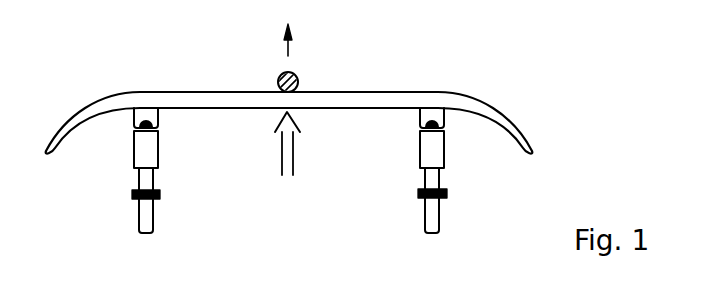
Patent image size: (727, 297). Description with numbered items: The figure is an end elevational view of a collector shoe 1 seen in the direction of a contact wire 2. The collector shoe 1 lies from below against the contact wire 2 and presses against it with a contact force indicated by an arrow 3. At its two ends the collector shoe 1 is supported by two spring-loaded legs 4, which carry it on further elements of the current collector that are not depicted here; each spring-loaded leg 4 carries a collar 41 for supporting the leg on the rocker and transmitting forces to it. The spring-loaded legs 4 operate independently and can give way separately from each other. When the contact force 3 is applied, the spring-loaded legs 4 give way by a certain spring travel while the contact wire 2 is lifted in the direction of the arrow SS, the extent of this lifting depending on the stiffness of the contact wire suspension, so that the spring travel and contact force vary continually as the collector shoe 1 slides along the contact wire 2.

The collector shoe 1 is at (382, 104).
The contact wire 2 is at (297, 75).
The contact force arrow 3 is at (293, 162).
The spring-loaded leg 4 is at (137, 170).
The collar 41 is at (160, 197).
The load direction SS is at (292, 50).